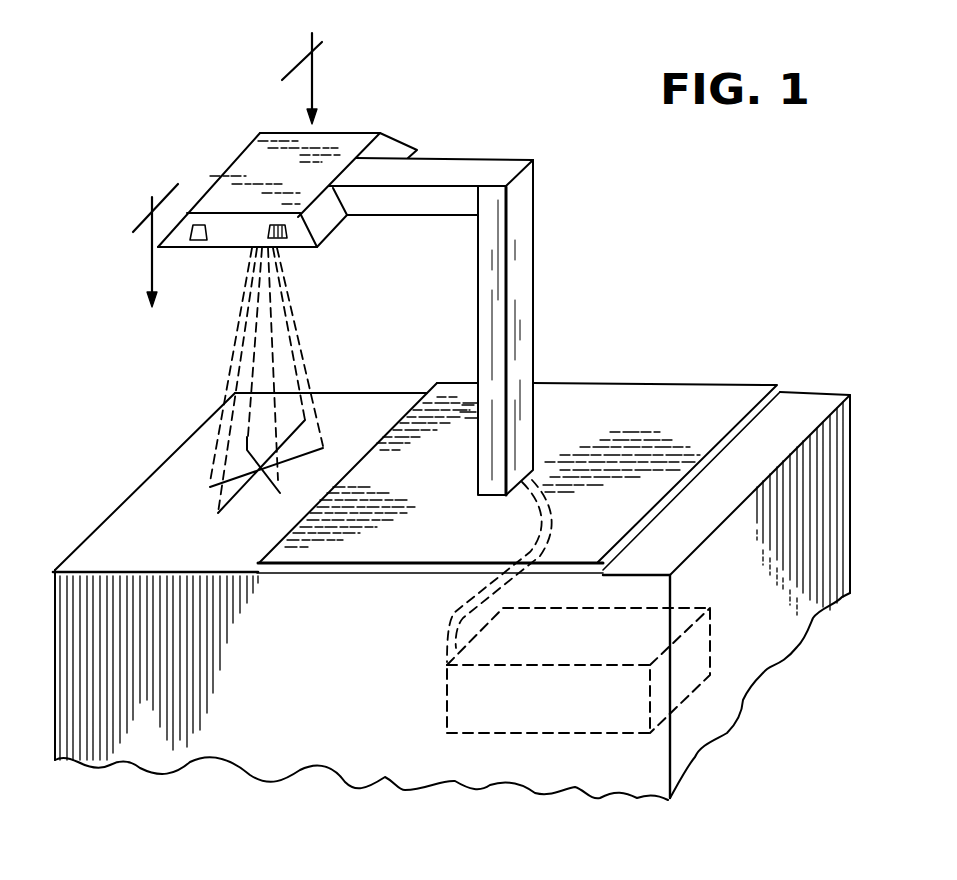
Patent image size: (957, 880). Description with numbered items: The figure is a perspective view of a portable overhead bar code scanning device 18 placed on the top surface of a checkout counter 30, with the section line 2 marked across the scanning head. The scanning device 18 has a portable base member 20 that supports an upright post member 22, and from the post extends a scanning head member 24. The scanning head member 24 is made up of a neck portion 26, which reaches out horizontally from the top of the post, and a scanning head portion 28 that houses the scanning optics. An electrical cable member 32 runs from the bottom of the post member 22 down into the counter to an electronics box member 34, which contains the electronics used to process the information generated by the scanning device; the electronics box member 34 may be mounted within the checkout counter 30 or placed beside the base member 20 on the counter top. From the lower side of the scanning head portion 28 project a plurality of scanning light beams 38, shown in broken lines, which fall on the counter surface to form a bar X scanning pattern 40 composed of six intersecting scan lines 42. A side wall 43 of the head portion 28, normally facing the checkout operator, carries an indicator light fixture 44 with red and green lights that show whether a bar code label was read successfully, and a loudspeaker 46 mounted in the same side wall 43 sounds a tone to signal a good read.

The section line 2- 2 is at (227, 156).
The bar code scanning device 18 is at (573, 263).
The portable base member 20 is at (656, 385).
The post member 22 is at (530, 357).
The scanning head member 24 is at (415, 113).
The neck portion 26 is at (492, 157).
The scanning head portion 28 is at (253, 147).
The checkout counter 30 is at (808, 394).
The electrical cable member 32 is at (445, 627).
The electronics box member 34 is at (443, 702).
The scanning light beams 38 is at (307, 333).
The bar X scanning pattern 40 is at (196, 466).
The intersecting scan lines 42 is at (247, 487).
The side wall 43 is at (218, 220).
The indicator light fixture 44 is at (197, 241).
The loudspeaker 46 is at (288, 234).